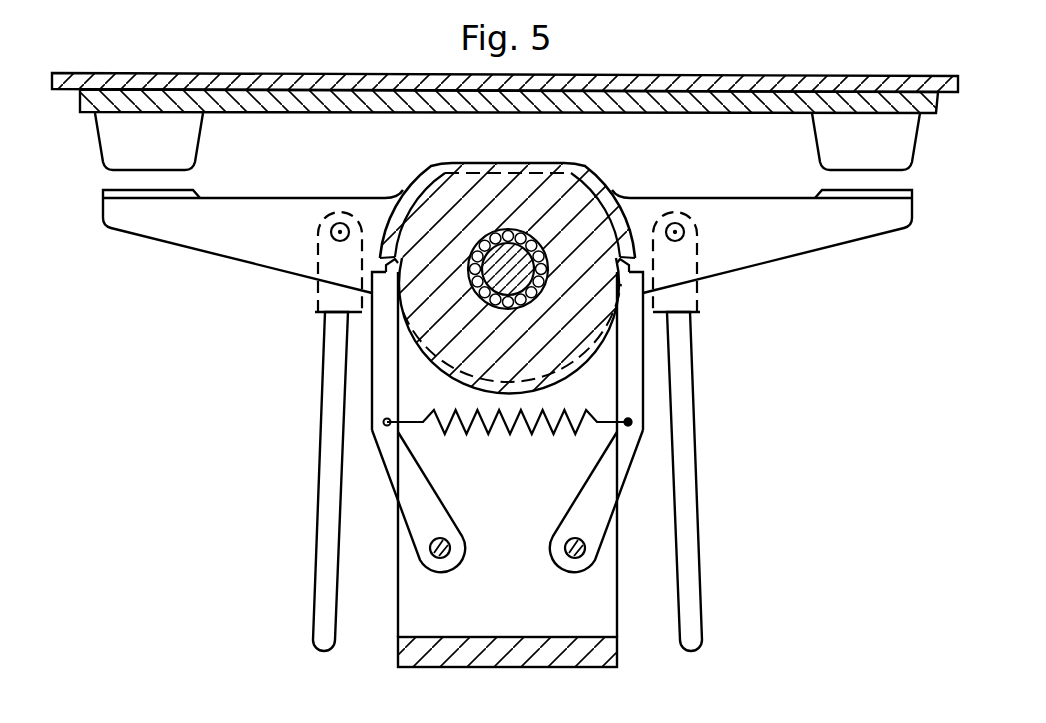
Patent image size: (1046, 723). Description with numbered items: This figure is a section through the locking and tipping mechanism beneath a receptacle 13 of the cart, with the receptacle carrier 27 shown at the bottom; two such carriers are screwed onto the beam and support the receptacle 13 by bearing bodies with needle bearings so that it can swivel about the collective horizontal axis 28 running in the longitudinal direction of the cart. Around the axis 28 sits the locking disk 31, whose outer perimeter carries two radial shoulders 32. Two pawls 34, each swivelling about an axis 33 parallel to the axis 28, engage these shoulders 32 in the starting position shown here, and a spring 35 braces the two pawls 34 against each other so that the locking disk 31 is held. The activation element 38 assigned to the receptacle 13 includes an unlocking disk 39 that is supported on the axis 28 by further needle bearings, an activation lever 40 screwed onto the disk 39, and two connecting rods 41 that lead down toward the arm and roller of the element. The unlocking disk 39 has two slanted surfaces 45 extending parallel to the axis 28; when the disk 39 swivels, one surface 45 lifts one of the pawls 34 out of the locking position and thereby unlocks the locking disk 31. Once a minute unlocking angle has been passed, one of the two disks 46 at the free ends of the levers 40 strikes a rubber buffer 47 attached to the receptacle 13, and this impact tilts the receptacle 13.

The receptacle 13 is at (247, 82).
The receptacle carrier 27 is at (502, 652).
The horizontal axis 28 is at (538, 239).
The locking disk 31 is at (507, 198).
The radial shoulder 32 is at (372, 293).
The pawl axis 33 is at (450, 545).
The pawl 34 is at (417, 477).
The spring 35 is at (503, 423).
The activation element 38 is at (712, 375).
The unlocking disk 39 is at (423, 168).
The activation lever 40 is at (243, 247).
The connecting rod 41 is at (327, 508).
The slanted surface 45 is at (377, 262).
The disk 46 is at (173, 195).
The rubber buffer 47 is at (187, 142).